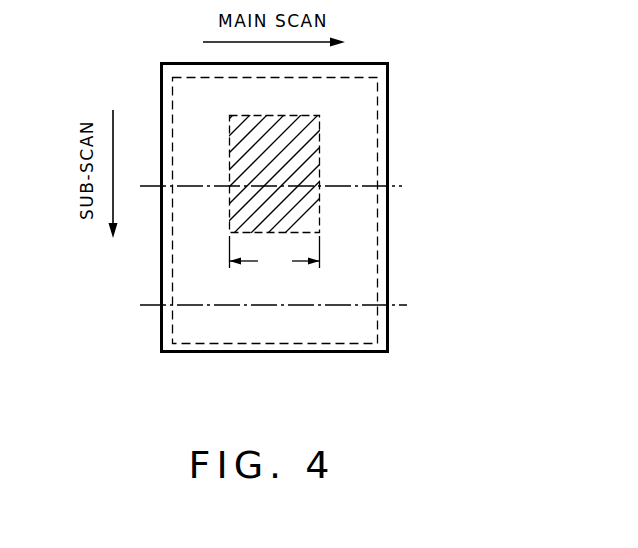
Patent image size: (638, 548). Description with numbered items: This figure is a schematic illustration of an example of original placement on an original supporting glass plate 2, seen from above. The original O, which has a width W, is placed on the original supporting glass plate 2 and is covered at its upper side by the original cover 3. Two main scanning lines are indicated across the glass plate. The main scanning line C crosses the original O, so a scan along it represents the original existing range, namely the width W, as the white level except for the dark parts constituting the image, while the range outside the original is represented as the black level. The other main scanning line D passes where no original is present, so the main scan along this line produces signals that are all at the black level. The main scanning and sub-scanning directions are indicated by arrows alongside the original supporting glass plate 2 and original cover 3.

The original supporting glass plate 2 is at (197, 343).
The original cover 3 is at (317, 352).
The original O is at (303, 116).
The width of the original W is at (275, 254).
The main scanning line C is at (350, 186).
The main scanning line D is at (347, 305).